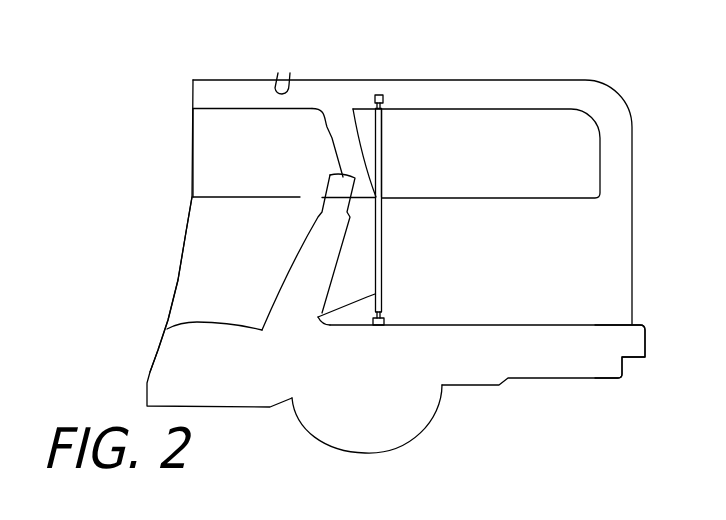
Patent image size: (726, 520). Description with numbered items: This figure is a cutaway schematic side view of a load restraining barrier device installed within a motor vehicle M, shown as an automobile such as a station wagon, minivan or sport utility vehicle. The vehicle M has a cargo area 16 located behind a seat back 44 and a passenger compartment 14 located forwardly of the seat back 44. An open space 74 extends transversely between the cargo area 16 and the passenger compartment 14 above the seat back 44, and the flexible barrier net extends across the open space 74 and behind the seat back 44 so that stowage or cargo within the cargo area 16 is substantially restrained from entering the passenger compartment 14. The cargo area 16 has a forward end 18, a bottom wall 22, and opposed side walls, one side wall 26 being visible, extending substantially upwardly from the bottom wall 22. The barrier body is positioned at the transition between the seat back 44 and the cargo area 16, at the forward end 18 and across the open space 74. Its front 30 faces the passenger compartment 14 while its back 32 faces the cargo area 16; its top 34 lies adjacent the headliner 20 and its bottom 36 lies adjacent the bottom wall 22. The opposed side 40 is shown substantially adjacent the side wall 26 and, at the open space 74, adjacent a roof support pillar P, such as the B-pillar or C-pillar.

The passenger compartment 14 is at (152, 284).
The cargo area 16 is at (418, 243).
The forward end 18 is at (403, 396).
The headliner 20 is at (293, 54).
The bottom wall 22 is at (609, 364).
The side wall 26 is at (440, 161).
The front 30 is at (329, 332).
The back 32 is at (420, 211).
The top 34 is at (445, 75).
The bottom 36 is at (423, 338).
The opposed side 40 is at (431, 153).
The seat back 44 is at (262, 252).
The open space 74 is at (371, 96).
The motor vehicle M is at (166, 143).
The roof support pillar P is at (350, 105).